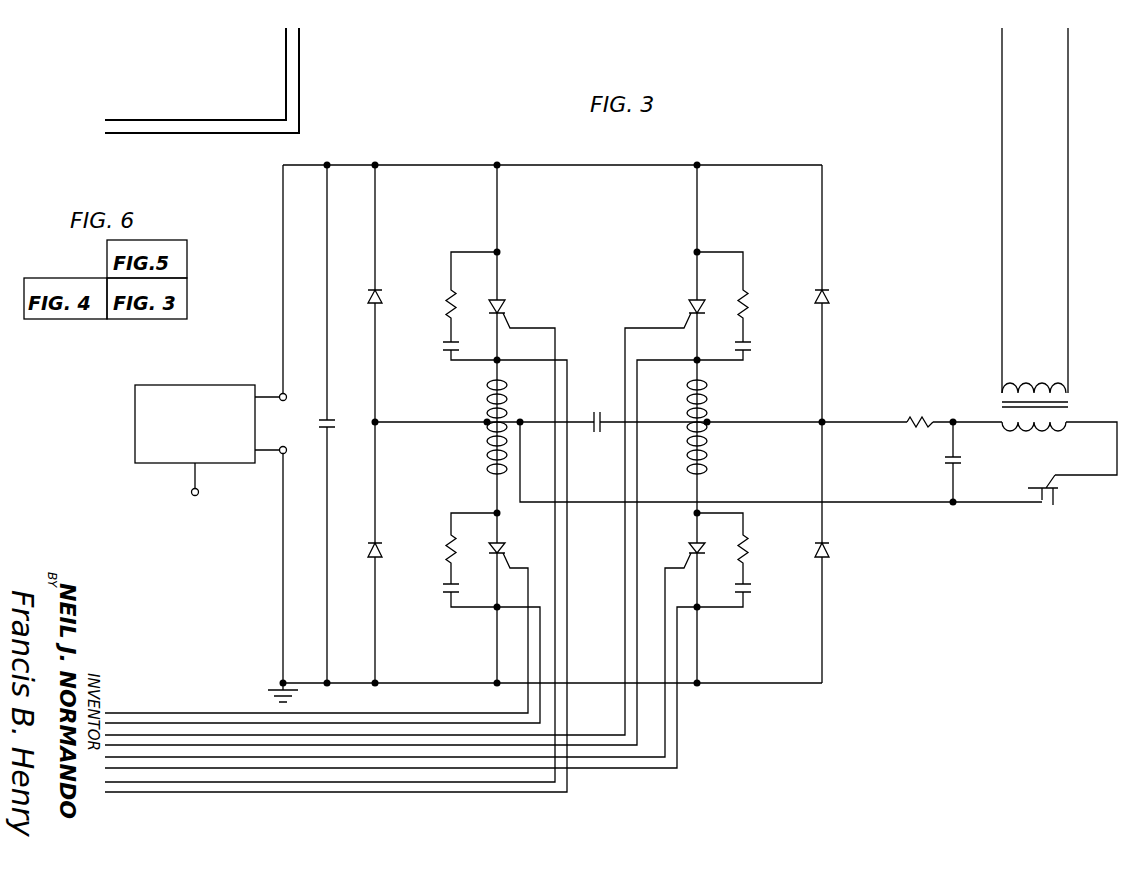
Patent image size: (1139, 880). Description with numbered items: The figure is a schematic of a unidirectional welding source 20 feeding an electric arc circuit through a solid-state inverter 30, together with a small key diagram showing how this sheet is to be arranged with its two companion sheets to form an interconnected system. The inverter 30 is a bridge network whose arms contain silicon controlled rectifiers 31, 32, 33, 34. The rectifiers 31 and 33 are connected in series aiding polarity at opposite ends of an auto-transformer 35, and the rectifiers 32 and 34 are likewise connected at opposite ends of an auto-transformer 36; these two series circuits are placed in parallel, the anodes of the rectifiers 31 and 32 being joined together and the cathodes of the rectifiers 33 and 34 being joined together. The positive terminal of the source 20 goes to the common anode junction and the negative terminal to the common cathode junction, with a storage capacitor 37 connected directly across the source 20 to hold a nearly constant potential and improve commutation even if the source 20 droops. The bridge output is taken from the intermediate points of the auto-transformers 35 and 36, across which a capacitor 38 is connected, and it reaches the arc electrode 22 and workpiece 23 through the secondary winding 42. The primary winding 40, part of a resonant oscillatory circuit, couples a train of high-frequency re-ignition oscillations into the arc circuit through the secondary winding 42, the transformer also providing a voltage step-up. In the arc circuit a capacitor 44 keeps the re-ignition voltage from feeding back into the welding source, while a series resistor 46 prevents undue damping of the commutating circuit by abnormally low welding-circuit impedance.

The source 20 is at (135, 455).
The arc electrode 22 is at (1046, 480).
The workpiece 23 is at (1053, 505).
The solid-state inverter 30 is at (590, 161).
The silicon controlled rectifier 31 is at (505, 308).
The silicon controlled rectifier 32 is at (689, 309).
The silicon controlled rectifier 33 is at (505, 550).
The silicon controlled rectifier 34 is at (689, 551).
The auto-transformer 35 is at (488, 405).
The auto-transformer 36 is at (706, 405).
The storage capacitor 37 is at (336, 420).
The capacitor 38 is at (597, 412).
The primary winding 40 is at (1060, 391).
The secondary winding 42 is at (1062, 421).
The capacitor 44 is at (945, 460).
The series resistor 46 is at (926, 412).